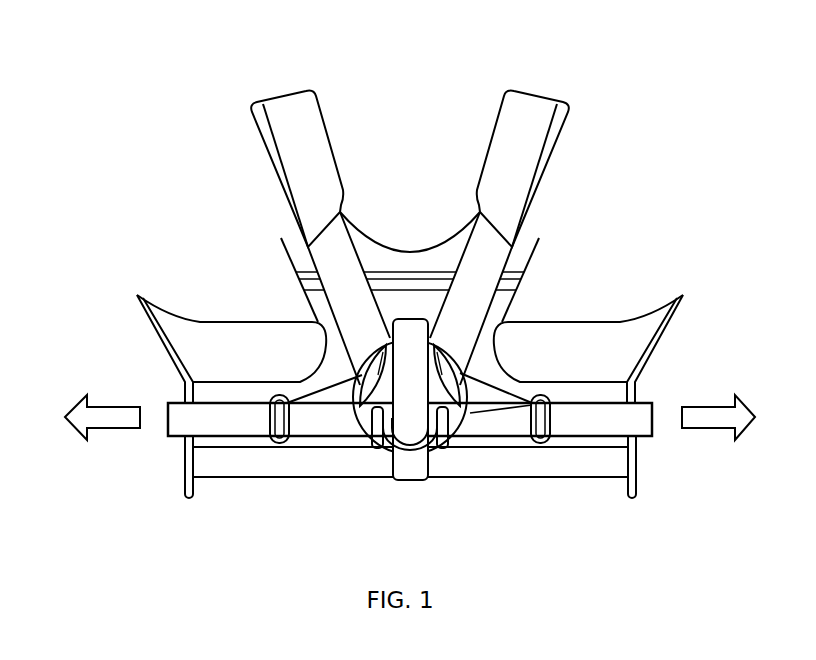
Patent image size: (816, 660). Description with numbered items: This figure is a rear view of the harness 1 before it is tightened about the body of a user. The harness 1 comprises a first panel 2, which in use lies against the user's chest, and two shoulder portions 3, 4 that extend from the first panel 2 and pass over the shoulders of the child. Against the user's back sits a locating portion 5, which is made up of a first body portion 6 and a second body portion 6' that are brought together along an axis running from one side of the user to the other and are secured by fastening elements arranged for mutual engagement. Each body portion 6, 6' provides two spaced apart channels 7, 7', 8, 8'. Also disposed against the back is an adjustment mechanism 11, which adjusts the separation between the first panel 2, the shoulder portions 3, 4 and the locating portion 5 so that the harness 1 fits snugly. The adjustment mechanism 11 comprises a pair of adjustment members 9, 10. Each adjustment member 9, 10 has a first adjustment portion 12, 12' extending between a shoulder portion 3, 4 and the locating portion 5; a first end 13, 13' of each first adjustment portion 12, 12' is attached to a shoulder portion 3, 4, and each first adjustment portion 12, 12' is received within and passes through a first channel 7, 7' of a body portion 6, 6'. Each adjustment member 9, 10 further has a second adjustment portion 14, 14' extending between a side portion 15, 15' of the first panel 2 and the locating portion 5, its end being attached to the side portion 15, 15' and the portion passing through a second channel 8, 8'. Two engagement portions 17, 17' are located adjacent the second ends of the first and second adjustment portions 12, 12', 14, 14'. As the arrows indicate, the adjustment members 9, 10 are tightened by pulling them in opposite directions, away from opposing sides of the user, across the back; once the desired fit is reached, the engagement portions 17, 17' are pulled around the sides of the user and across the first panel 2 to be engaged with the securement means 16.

The harness 1 is at (122, 112).
The first panel 2 is at (636, 394).
The shoulder portion 3 is at (293, 125).
The shoulder portion 4 is at (523, 113).
The locating portion 5 is at (360, 413).
The first body portion 6 is at (335, 428).
The second body portion 6' is at (474, 425).
The first channel 7 is at (405, 339).
The first channel 7' is at (410, 326).
The second channel 8 is at (386, 459).
The second channel 8' is at (456, 470).
The adjustment member 9 is at (322, 308).
The adjustment member 10 is at (488, 308).
The adjustment mechanism 11 is at (627, 452).
The first adjustment portion 12 is at (349, 287).
The first adjustment portion 12' is at (517, 298).
The first end 13 is at (264, 253).
The first end 13' is at (557, 239).
The second adjustment portion 14 is at (283, 388).
The second adjustment portion 14' is at (513, 446).
The side portion 15 is at (166, 467).
The side portion 15' is at (660, 460).
The securement means 16 is at (552, 425).
The engagement portion 17 is at (227, 358).
The engagement portion 17' is at (588, 357).